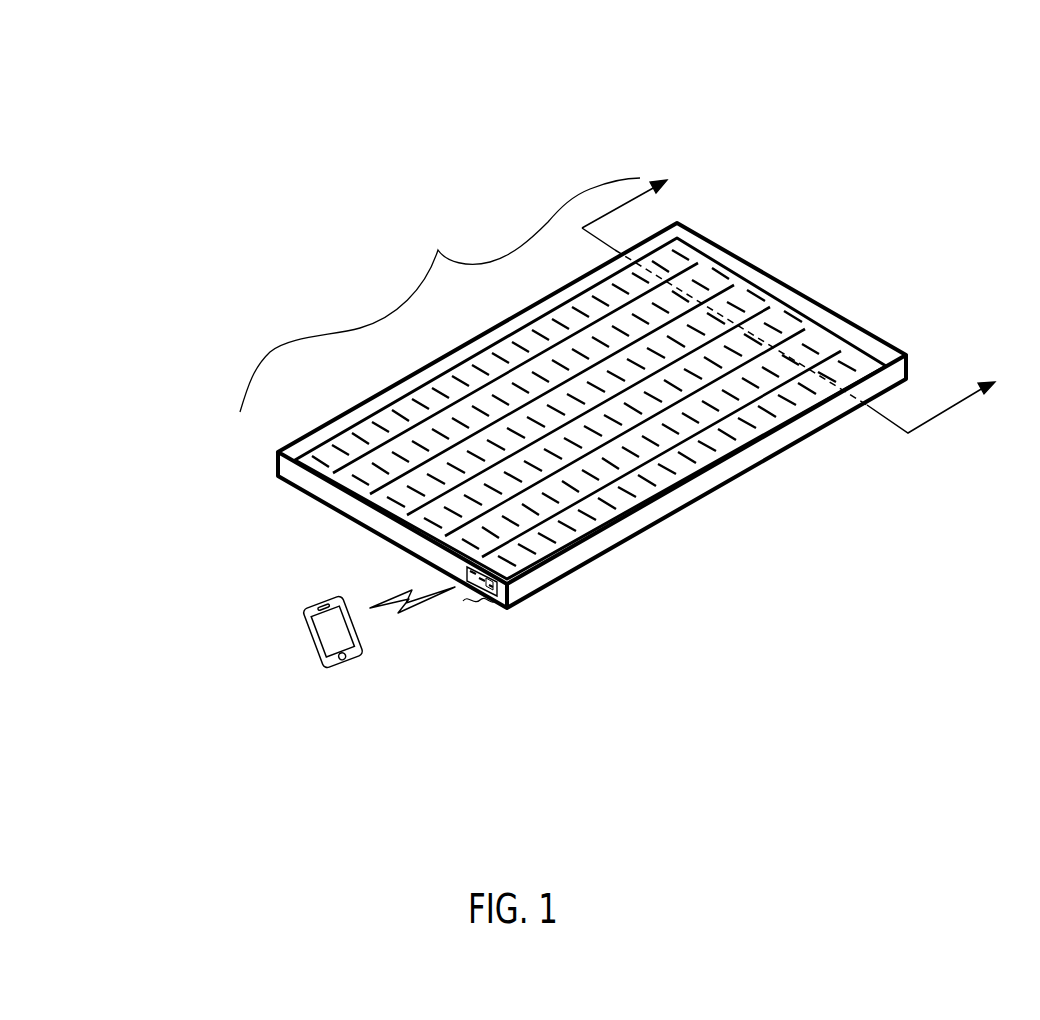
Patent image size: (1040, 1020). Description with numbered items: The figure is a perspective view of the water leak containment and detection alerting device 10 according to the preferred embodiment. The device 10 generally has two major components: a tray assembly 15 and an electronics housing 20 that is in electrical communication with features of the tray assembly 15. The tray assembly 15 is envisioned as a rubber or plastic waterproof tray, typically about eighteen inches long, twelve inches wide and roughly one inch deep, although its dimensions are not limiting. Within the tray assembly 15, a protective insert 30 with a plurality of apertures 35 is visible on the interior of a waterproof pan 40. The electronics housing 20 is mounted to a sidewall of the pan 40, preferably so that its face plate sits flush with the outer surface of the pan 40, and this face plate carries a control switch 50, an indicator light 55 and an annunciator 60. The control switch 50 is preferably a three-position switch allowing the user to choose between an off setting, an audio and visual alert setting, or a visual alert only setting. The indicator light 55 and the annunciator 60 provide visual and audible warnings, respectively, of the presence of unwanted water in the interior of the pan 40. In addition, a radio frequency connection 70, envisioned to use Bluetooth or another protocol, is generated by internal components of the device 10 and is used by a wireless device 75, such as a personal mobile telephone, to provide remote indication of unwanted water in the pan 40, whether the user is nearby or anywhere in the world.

The water leak containment and detection alerting device 10 is at (199, 191).
The tray assembly 15 is at (438, 244).
The electronics housing 20 is at (473, 605).
The protective insert 30 is at (756, 388).
The apertures 35 is at (659, 430).
The waterproof pan 40 is at (745, 262).
The control switch 50 is at (482, 602).
The indicator light 55 is at (468, 573).
The annunciator 60 is at (507, 608).
The radio frequency (RF) connection 70 is at (380, 602).
The wireless device 75 is at (360, 662).